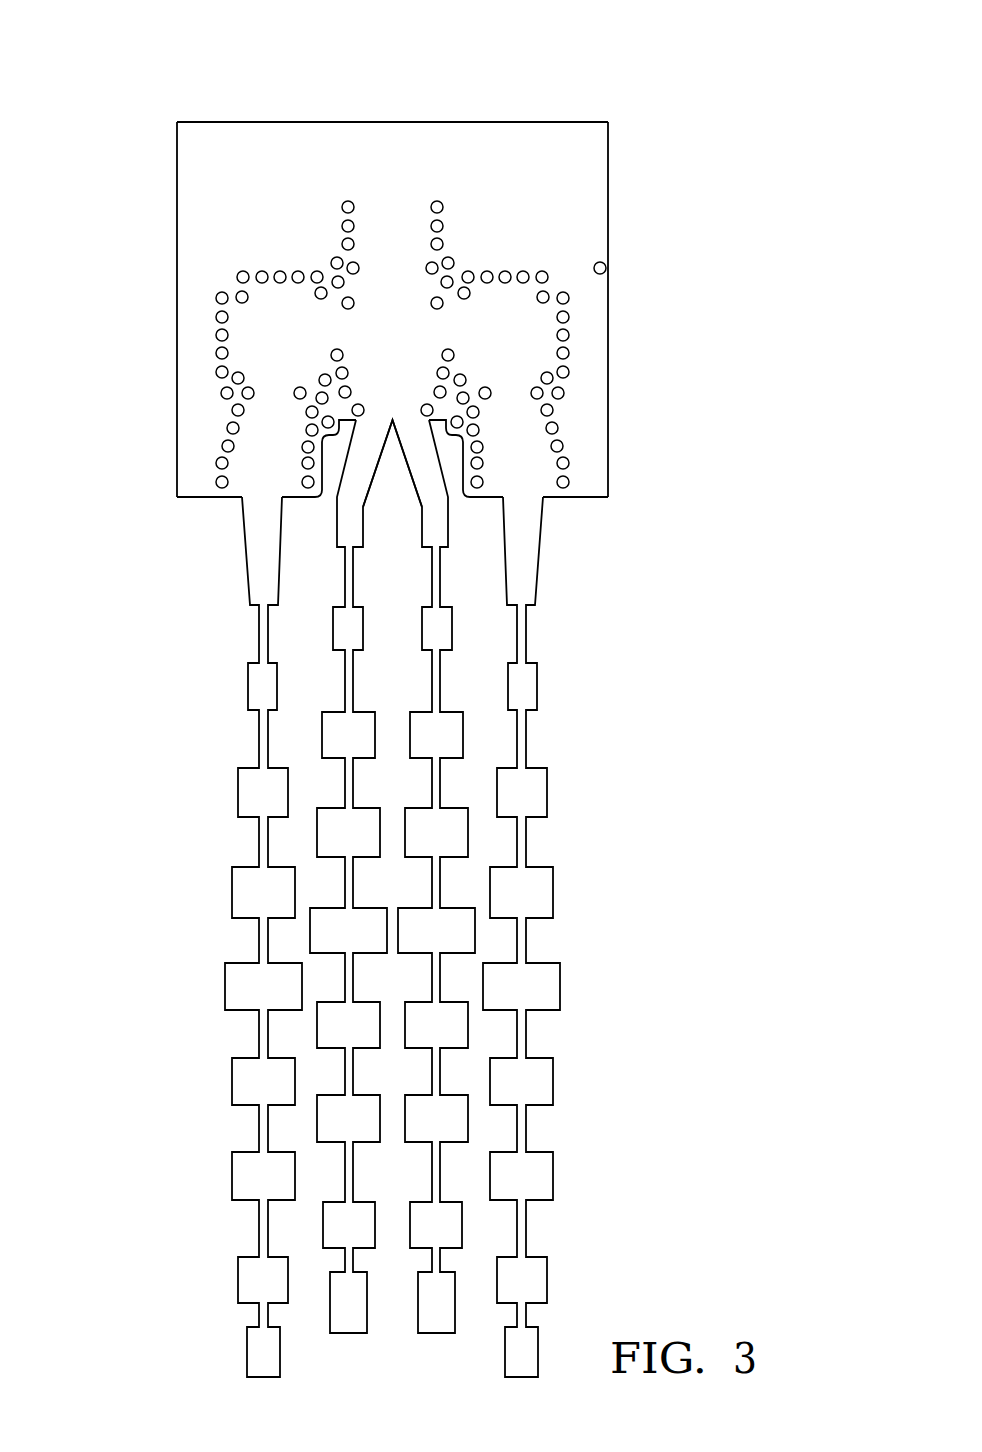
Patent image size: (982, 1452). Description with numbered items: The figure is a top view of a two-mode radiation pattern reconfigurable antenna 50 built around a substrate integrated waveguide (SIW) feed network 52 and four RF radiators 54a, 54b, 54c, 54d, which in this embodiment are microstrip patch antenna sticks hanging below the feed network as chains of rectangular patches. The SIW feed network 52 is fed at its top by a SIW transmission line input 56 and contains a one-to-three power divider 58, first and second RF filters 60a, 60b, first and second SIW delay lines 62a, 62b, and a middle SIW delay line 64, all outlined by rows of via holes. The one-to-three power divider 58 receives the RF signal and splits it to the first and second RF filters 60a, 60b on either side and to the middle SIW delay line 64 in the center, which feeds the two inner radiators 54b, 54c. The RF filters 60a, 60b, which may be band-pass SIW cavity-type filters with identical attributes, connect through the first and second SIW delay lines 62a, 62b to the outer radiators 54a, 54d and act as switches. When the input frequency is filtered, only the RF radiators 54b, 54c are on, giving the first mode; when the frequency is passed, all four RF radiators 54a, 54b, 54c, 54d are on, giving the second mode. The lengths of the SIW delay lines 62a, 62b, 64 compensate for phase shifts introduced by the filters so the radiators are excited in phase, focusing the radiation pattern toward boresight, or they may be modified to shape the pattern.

The two-mode radiation pattern reconfigurable antenna 50 is at (160, 47).
The substrate integrated waveguide (SIW) feed network 52 is at (617, 126).
The RF radiator 54a is at (237, 757).
The RF radiator 54b is at (331, 706).
The RF radiator 54c is at (454, 706).
The RF radiator 54d is at (548, 757).
The SIW transmission line input 56 is at (370, 163).
The one-to-three power divider 58 is at (405, 333).
The first RF filter 60a is at (262, 352).
The second RF filter 60b is at (523, 352).
The first SIW delay line 62a is at (263, 470).
The second SIW delay line 62b is at (522, 470).
The middle SIW delay line 64 is at (387, 387).